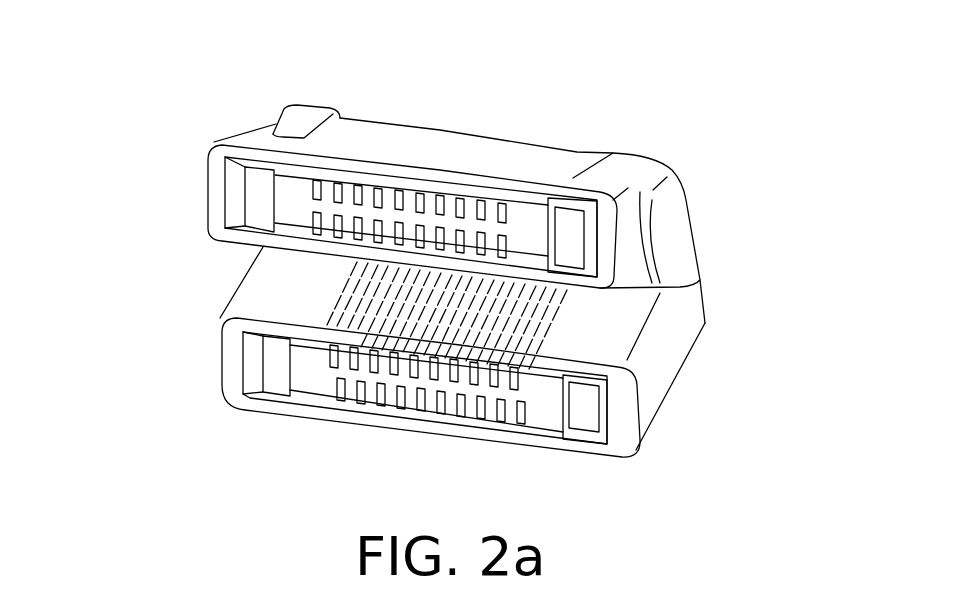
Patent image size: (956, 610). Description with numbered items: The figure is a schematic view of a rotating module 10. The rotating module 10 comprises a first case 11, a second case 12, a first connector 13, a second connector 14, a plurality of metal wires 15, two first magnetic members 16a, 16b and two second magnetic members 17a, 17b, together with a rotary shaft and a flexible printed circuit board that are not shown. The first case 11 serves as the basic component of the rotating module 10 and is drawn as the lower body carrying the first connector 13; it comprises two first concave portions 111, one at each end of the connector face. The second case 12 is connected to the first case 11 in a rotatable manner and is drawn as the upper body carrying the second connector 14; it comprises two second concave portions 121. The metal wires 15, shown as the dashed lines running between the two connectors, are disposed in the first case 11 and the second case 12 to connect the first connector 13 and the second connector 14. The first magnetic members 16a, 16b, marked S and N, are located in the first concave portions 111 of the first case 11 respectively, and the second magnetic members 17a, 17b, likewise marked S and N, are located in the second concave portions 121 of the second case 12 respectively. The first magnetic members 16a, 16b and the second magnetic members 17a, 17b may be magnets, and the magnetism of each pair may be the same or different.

The rotating module 10 is at (226, 53).
The first case 11 is at (665, 365).
The second case 12 is at (547, 160).
The first connector 13 is at (317, 382).
The second connector 14 is at (292, 183).
The metal wires 15 is at (357, 290).
The first magnetic member 16a is at (260, 352).
The first magnetic member 16b is at (597, 401).
The second magnetic member 17a is at (260, 178).
The second magnetic member 17b is at (580, 226).
The first concave portions 111 is at (268, 387).
The second concave portions 121 is at (233, 208).